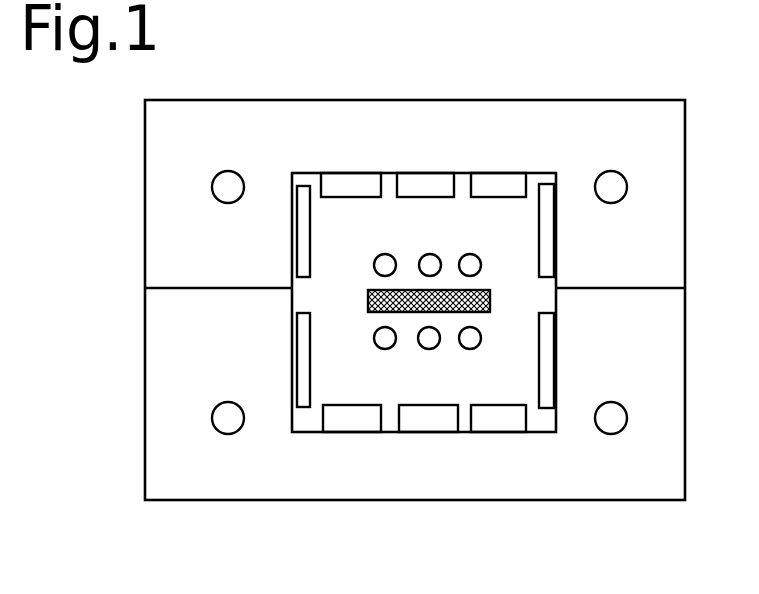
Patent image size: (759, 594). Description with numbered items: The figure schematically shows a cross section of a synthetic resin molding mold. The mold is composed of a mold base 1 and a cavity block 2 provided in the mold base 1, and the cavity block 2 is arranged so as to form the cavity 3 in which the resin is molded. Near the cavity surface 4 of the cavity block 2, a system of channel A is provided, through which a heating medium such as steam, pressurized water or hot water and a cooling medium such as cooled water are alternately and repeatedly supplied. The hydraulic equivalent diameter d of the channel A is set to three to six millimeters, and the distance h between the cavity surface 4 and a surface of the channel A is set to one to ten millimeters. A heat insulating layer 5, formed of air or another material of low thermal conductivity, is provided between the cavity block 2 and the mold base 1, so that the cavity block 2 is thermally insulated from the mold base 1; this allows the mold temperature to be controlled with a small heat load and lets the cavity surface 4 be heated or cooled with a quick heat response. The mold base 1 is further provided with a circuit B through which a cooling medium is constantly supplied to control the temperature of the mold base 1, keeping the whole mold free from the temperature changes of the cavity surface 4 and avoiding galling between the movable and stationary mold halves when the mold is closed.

The mold base 1 is at (652, 100).
The cavity block 2 is at (525, 232).
The cavity 3 is at (490, 298).
The cavity surface 4 is at (480, 288).
The heat insulating layer 5 is at (345, 423).
The channel A is at (433, 349).
The circuit B is at (620, 428).
The distance h is at (341, 288).
The hydraulic equivalent diameter d is at (419, 223).